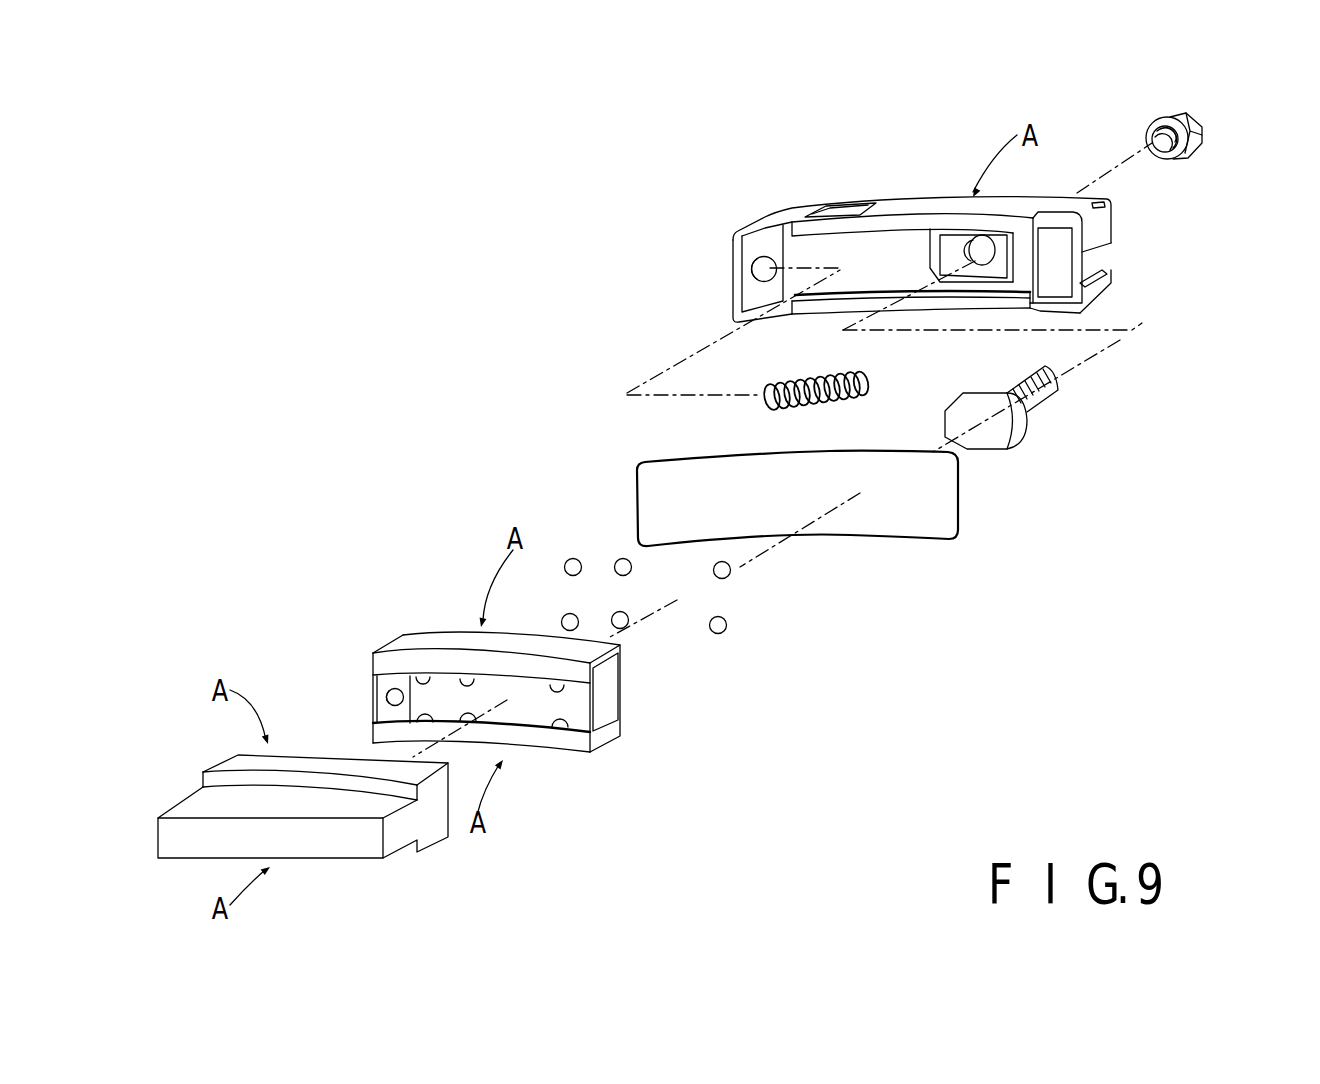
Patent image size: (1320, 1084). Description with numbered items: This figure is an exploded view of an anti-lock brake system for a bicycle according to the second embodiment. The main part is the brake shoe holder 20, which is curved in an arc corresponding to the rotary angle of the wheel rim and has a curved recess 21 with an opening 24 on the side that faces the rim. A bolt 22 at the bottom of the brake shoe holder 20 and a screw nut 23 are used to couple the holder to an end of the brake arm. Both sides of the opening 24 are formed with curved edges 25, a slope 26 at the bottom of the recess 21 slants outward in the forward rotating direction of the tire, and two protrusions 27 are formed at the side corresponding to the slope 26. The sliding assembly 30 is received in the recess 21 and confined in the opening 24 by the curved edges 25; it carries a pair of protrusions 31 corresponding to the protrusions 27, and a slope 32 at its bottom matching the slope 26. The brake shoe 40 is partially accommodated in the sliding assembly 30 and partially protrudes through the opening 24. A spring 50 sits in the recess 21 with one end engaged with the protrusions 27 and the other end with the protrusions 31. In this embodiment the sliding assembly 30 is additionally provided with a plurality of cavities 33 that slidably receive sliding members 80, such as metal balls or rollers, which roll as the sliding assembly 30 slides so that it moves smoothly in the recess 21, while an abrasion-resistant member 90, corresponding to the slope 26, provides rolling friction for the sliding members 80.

The brake shoe holder 20 is at (922, 216).
The recess 21 is at (1042, 274).
The bolt 22 is at (1013, 440).
The screw nut 23 is at (1204, 118).
The opening 24 is at (1102, 257).
The edge 25 is at (950, 171).
The slope 26 is at (832, 181).
The protrusion 27 is at (734, 234).
The sliding assembly 30 is at (516, 727).
The protrusion 31 is at (359, 689).
The slope 32 is at (653, 697).
The cavity 33 is at (487, 696).
The brake shoe 40 is at (315, 840).
The spring 50 is at (850, 381).
The sliding member 80 is at (646, 553).
The abrasion-resistant member 90 is at (804, 528).